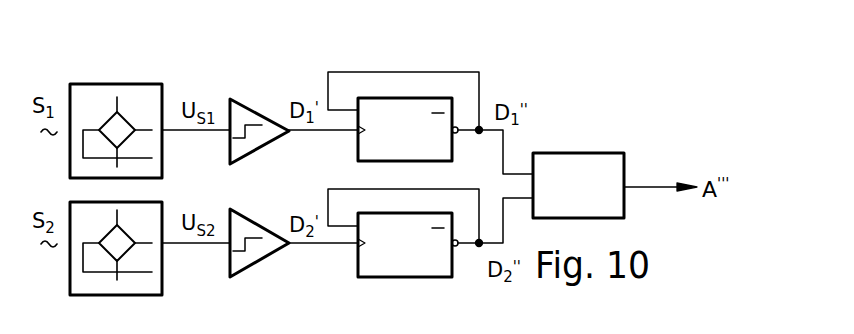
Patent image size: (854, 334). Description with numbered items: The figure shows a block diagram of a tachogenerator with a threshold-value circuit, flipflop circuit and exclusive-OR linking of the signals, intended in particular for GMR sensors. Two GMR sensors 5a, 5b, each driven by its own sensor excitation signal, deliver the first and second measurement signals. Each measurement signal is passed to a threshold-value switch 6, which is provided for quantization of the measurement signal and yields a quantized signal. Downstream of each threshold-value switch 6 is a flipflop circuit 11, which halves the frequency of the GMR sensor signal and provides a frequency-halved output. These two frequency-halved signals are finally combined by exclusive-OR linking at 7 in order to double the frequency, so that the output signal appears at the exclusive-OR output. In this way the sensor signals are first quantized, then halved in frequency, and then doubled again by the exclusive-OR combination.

The GMR sensor 5a is at (98, 84).
The GMR sensor 5b is at (162, 279).
The threshold-value switch 6 is at (245, 101).
The exclusive-OR linking 7 is at (595, 153).
The flipflop circuit 11 is at (358, 143).